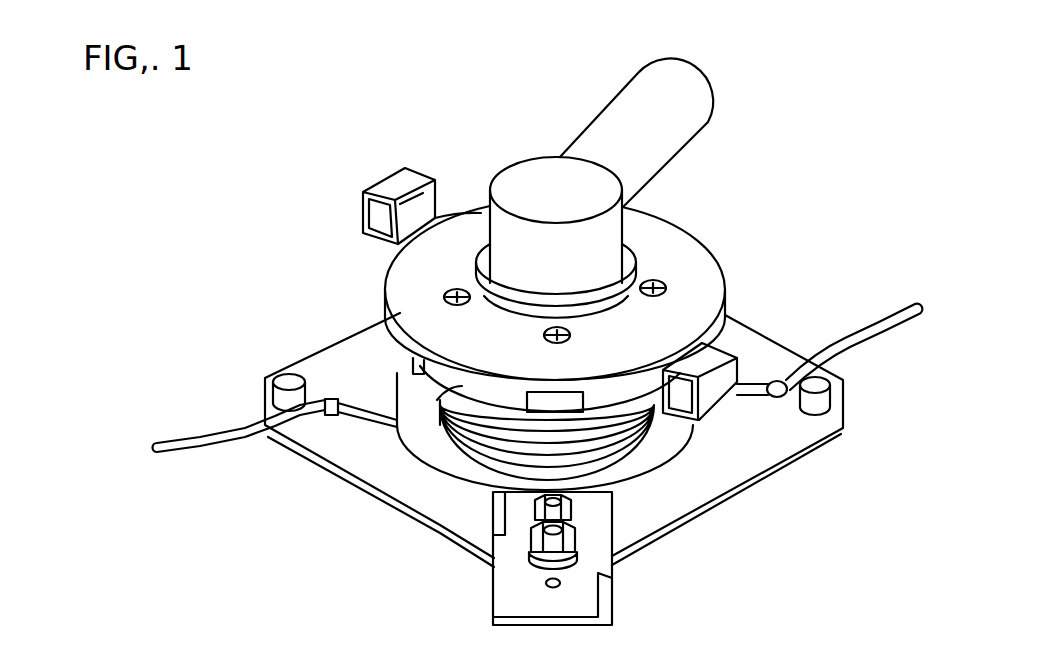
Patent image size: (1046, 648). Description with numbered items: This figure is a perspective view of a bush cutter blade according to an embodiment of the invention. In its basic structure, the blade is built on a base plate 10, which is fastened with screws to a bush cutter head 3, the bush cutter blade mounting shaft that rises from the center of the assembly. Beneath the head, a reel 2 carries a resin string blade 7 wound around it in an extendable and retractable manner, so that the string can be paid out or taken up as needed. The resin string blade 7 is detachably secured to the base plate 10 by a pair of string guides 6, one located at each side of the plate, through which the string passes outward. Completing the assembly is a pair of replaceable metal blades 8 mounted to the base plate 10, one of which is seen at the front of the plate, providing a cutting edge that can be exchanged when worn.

The reel 2 is at (667, 430).
The bush cutter head 3 is at (597, 238).
The string guide 6 is at (288, 383).
The resin string blade 7 is at (360, 407).
The replaceable metal blade 8 is at (580, 592).
The base plate 10 is at (653, 507).